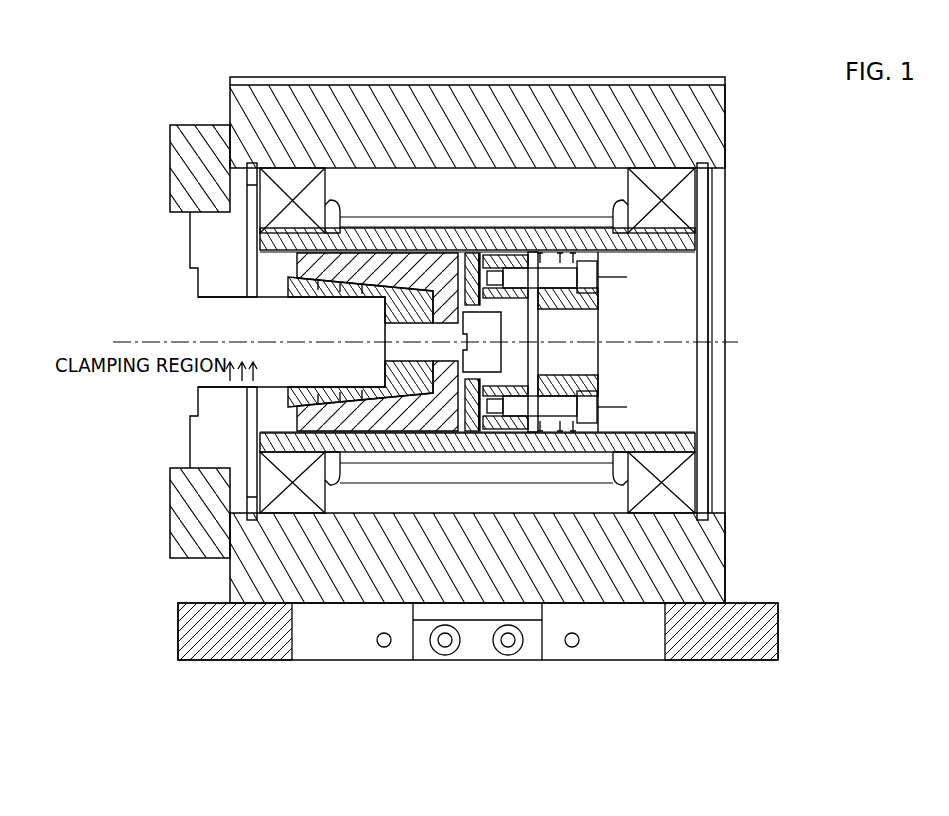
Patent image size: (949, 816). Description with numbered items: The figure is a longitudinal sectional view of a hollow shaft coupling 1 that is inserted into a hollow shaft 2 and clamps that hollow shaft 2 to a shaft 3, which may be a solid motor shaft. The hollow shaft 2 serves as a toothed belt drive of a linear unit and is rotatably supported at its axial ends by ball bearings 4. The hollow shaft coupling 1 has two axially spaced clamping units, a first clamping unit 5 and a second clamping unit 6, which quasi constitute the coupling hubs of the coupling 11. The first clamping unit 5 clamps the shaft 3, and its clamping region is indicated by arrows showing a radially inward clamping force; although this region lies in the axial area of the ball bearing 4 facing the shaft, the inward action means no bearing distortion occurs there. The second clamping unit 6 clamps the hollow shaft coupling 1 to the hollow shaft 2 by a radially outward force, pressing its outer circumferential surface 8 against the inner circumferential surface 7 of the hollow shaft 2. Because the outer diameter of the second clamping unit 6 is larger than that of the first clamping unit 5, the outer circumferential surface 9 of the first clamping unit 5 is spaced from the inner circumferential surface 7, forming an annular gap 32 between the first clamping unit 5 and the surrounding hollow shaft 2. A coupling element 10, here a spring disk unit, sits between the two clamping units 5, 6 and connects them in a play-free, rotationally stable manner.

The hollow shaft coupling 1 is at (619, 307).
The hollow shaft 2 is at (672, 442).
The shaft 3 is at (249, 335).
The ball bearings 4 is at (280, 210).
The first clamping unit 5 is at (387, 408).
The second clamping unit 6 is at (527, 432).
The inner circumferential surface 7 is at (652, 426).
The outer circumferential surface 8 is at (566, 425).
The outer circumferential surface 9 is at (305, 440).
The coupling element 10 is at (455, 57).
The coupling 11 is at (505, 690).
The annular gap 32 is at (297, 253).